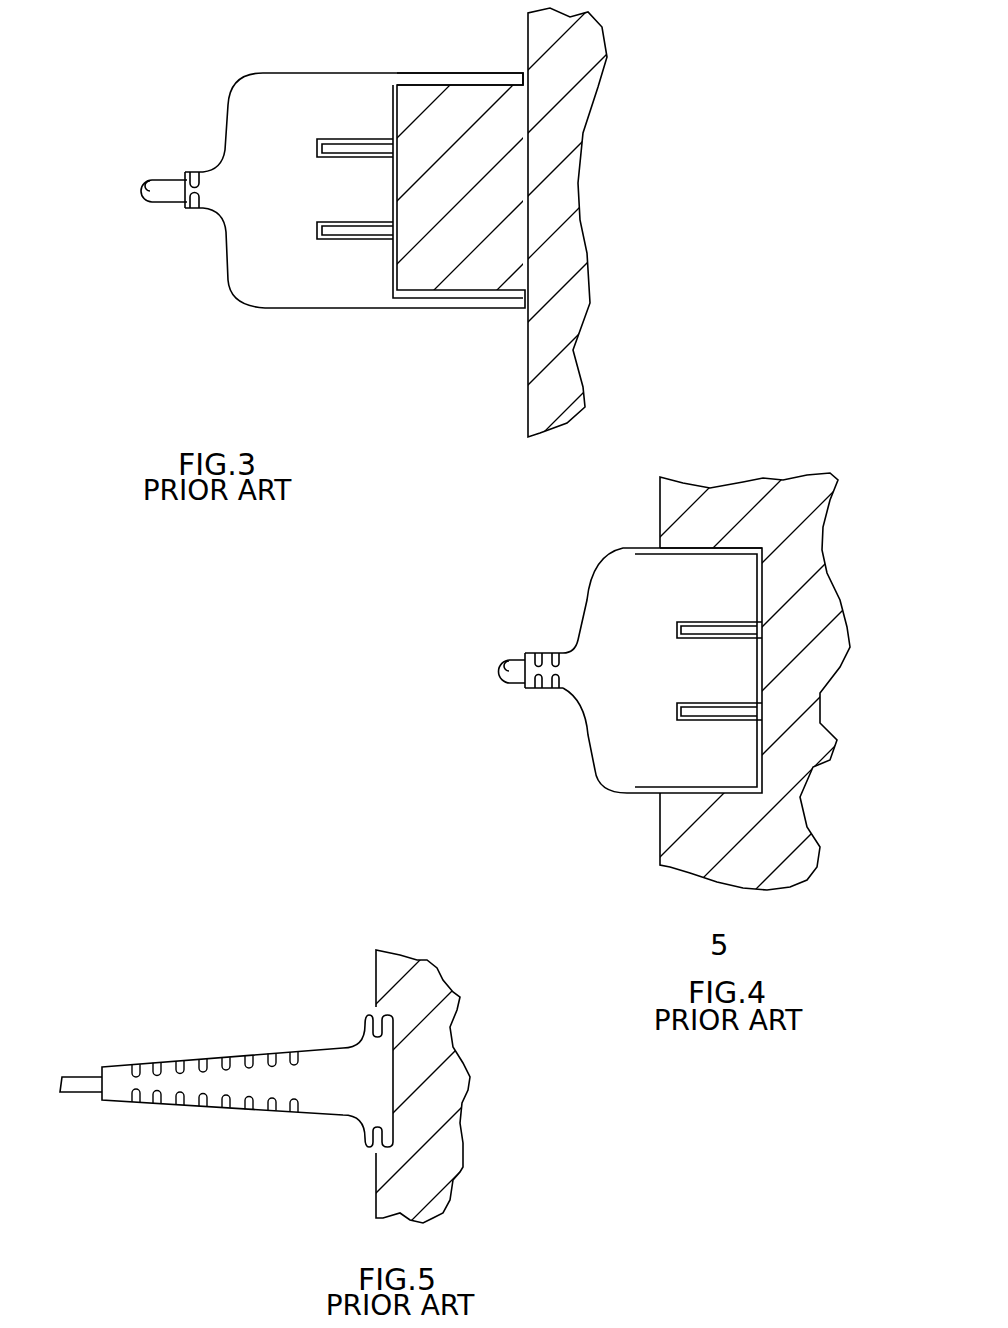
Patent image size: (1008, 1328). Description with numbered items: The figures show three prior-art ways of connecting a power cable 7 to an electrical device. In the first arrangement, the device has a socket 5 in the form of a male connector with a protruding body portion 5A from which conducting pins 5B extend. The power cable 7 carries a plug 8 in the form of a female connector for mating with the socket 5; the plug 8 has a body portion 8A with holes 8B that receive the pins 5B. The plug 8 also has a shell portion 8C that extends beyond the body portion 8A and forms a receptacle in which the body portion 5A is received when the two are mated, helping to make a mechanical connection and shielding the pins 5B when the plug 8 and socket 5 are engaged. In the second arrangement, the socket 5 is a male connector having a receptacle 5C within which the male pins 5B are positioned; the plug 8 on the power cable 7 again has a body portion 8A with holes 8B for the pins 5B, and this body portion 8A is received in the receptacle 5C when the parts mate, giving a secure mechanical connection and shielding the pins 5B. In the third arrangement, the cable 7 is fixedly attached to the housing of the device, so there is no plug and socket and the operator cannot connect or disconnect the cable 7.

In FIG. 3, the socket 5 is at (563, 68).
In FIG. 4, the socket 5 is at (782, 500).
In FIG. 5, the socket 5 is at (397, 970).
In FIG. 3, the protruding body portion 5A is at (430, 262).
In FIG. 3, the conducting pins 5B is at (362, 132).
In FIG. 4, the conducting pins 5B is at (690, 628).
In FIG. 4, the receptacle 5C is at (692, 547).
In FIG. 3, the power cable 7 is at (170, 193).
In FIG. 4, the power cable 7 is at (513, 672).
In FIG. 5, the power cable 7 is at (77, 1087).
In FIG. 3, the plug 8 is at (336, 203).
In FIG. 4, the plug 8 is at (641, 722).
In FIG. 3, the body portion 8A is at (257, 137).
In FIG. 4, the body portion 8A is at (603, 702).
In FIG. 3, the holes 8B is at (317, 233).
In FIG. 4, the holes 8B is at (675, 717).
In FIG. 3, the shell portion 8C is at (454, 66).